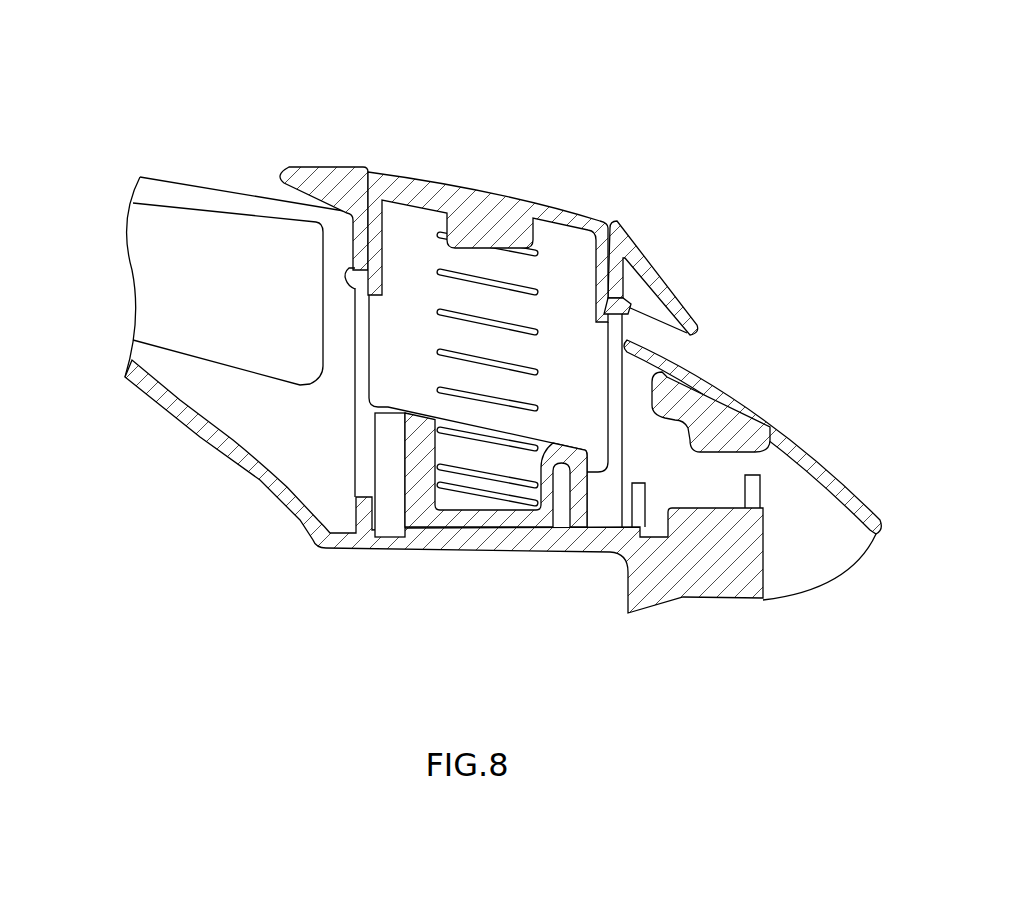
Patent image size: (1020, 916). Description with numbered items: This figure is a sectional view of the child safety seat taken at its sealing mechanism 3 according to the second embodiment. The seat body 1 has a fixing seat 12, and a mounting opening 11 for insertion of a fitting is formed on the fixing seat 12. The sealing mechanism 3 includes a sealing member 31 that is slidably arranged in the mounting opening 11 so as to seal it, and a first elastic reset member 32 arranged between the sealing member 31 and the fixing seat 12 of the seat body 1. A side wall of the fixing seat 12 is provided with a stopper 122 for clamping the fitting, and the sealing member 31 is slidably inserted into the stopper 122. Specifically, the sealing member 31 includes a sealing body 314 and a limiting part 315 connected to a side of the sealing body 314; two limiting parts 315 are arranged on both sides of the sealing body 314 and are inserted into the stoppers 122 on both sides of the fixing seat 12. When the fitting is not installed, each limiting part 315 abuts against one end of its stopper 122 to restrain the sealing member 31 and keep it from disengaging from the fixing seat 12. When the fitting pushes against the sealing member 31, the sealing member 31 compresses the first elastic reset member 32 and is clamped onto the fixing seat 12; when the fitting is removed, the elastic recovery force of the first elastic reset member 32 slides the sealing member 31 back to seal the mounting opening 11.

The seat body 1 is at (202, 198).
The mounting opening 11 is at (405, 238).
The fixing seat 12 is at (337, 173).
The stopper 122 is at (350, 312).
The sealing mechanism 3 is at (458, 49).
The sealing member 31 is at (365, 294).
The sealing body 314 is at (520, 210).
The limiting part 315 is at (365, 280).
The first elastic reset member 32 is at (497, 283).